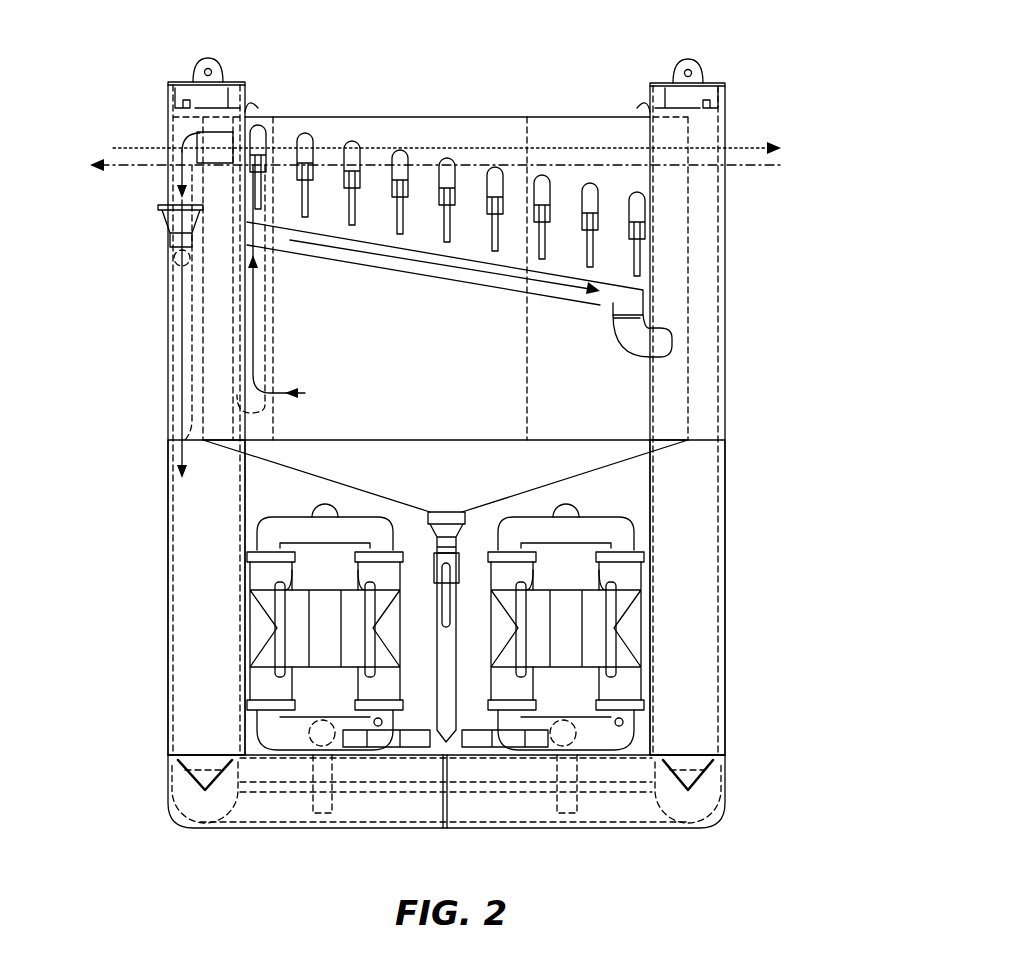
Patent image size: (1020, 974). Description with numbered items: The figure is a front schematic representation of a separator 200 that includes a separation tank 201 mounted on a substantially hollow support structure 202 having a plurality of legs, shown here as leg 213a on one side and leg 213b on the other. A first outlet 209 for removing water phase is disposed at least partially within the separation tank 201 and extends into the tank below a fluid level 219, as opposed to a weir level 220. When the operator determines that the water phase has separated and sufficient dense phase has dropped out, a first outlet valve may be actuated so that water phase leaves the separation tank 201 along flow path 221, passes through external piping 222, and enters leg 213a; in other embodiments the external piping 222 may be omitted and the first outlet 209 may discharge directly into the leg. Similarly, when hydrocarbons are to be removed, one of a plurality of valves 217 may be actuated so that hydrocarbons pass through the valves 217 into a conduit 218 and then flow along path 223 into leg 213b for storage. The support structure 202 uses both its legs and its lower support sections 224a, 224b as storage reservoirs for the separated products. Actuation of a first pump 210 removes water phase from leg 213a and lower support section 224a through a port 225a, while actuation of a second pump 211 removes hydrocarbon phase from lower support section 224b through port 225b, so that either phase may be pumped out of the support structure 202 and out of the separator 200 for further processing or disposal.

The separator 200 is at (473, 59).
The separation tank 201 is at (500, 145).
The support structure 202 is at (730, 765).
The first outlet 209 is at (233, 332).
The first pump 210 is at (347, 540).
The second pump 211 is at (587, 540).
The leg 213a is at (232, 623).
The leg 213b is at (712, 623).
The valves 217 is at (648, 205).
The conduit 218 is at (400, 272).
The fluid level 219 is at (130, 172).
The weir level 220 is at (743, 147).
The flow path 221 is at (255, 350).
The external piping 222 is at (157, 207).
The path 223 is at (508, 292).
The lower support section 224a is at (407, 808).
The lower support section 224b is at (482, 810).
The port 225a is at (313, 803).
The port 225b is at (577, 802).